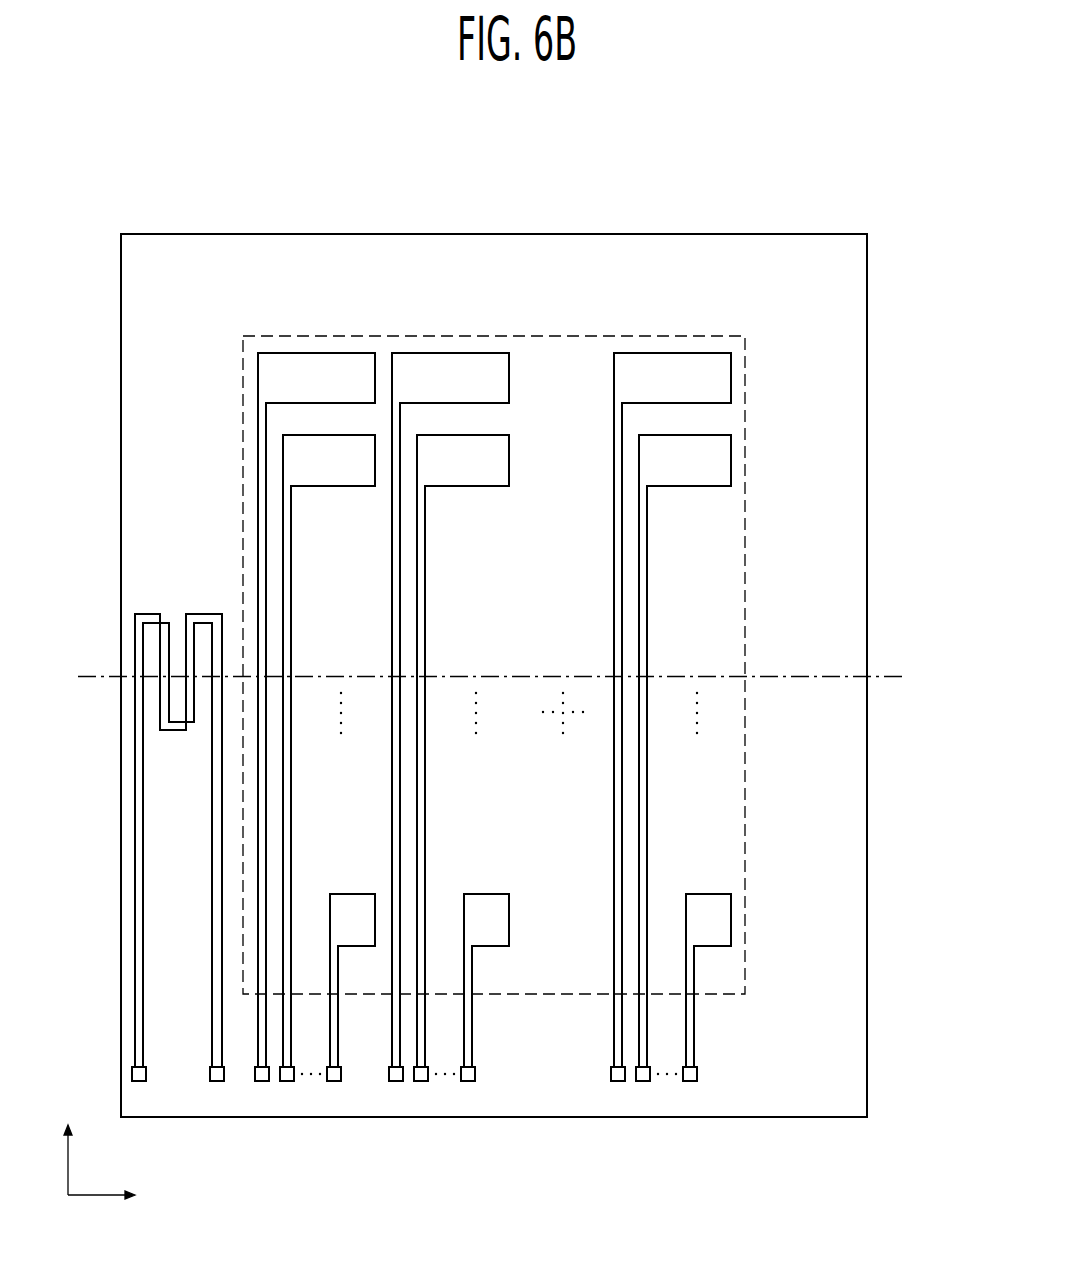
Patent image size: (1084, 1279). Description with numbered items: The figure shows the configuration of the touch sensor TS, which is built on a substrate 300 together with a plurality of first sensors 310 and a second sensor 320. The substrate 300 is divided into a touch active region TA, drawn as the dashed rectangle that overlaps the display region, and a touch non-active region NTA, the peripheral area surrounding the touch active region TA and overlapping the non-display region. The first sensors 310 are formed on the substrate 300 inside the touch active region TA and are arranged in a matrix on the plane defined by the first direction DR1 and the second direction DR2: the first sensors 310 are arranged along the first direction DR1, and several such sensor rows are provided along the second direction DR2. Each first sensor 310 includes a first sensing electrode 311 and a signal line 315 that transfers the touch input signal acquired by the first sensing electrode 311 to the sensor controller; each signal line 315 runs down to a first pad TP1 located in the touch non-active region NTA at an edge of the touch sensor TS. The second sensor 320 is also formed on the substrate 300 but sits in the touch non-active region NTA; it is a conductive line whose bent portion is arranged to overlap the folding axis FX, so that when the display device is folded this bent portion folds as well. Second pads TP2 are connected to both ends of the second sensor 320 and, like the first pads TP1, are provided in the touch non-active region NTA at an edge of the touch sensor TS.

The touch sensor TS is at (837, 146).
The substrate 300 is at (867, 297).
The touch non-active region NTA is at (304, 289).
The touch active region TA is at (706, 336).
The first sensor 310 is at (170, 368).
The first sensing electrode 311 is at (258, 384).
The signal line 315 is at (258, 442).
The second sensor 320 is at (153, 613).
The first pad TP1 is at (262, 1082).
The second pad TP2 is at (140, 1082).
The folding axis FX is at (477, 678).
The first direction DR1 is at (122, 1196).
The second direction DR2 is at (70, 1145).